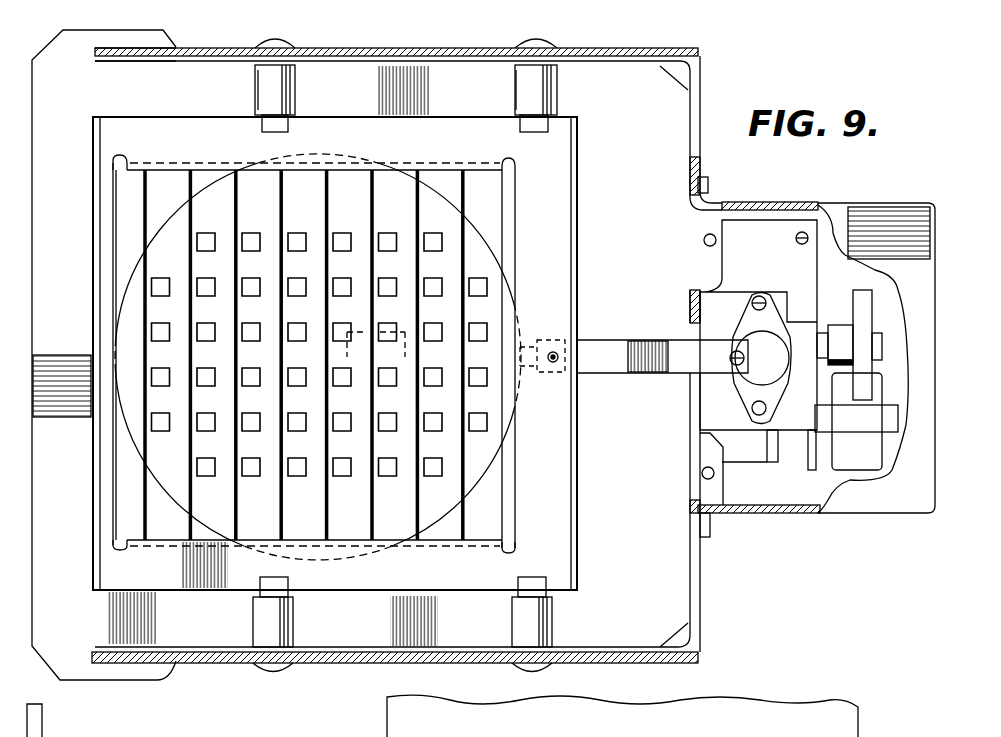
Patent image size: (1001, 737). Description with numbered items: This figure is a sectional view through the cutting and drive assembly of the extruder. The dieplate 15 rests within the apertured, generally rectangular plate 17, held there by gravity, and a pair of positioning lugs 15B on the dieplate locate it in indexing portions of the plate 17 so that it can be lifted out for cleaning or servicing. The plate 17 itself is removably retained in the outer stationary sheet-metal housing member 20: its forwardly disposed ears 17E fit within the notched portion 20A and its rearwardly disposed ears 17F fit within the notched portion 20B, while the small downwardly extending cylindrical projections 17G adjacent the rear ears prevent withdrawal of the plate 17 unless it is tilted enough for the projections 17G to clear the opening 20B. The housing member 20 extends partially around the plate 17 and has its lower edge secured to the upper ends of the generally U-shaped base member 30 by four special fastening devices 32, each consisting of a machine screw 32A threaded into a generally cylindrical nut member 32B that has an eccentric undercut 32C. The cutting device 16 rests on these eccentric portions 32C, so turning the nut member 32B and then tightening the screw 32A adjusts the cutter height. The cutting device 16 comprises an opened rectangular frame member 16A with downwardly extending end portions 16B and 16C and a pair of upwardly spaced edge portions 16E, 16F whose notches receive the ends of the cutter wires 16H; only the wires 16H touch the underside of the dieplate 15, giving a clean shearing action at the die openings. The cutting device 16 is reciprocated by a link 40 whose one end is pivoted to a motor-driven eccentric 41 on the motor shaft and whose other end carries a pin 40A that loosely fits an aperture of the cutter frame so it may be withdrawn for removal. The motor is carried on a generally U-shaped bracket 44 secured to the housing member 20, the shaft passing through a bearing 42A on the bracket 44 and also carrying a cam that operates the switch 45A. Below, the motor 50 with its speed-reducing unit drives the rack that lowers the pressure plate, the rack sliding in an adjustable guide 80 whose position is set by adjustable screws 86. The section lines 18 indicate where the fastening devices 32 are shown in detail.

The dieplate 15 is at (158, 488).
The positioning lugs 15B is at (112, 347).
The cutting device 16 is at (580, 182).
The rectangular frame member 16A is at (557, 250).
The downwardly extending end portion 16B is at (95, 428).
The downwardly extending end portion 16C is at (576, 420).
The edge portion 16E is at (423, 163).
The edge portion 16F is at (428, 550).
The cutter wires 16H is at (190, 223).
The plate 17 is at (68, 648).
The forwardly disposed ears 17E is at (150, 42).
The rearwardly disposed ears 17F is at (742, 203).
The downwardly extending projections 17G is at (716, 240).
The section line 18 is at (272, 565).
The housing member 20 is at (626, 62).
The notched portion 20A is at (185, 58).
The notched portion 20B is at (707, 193).
The base member 30 is at (467, 50).
The fastening devices 32 is at (300, 98).
The machine screw 32A is at (416, 358).
The nut member 32B is at (265, 87).
The undercut 32C is at (292, 126).
The link 40 is at (620, 348).
The pin 40A is at (557, 362).
The eccentric 41 is at (748, 375).
The bearing 42A is at (767, 387).
The bracket 44 is at (735, 303).
The switch 45A is at (863, 303).
The motor 50 is at (782, 713).
The adjustable guide 80 is at (695, 735).
The adjustable screws 86 is at (727, 725).